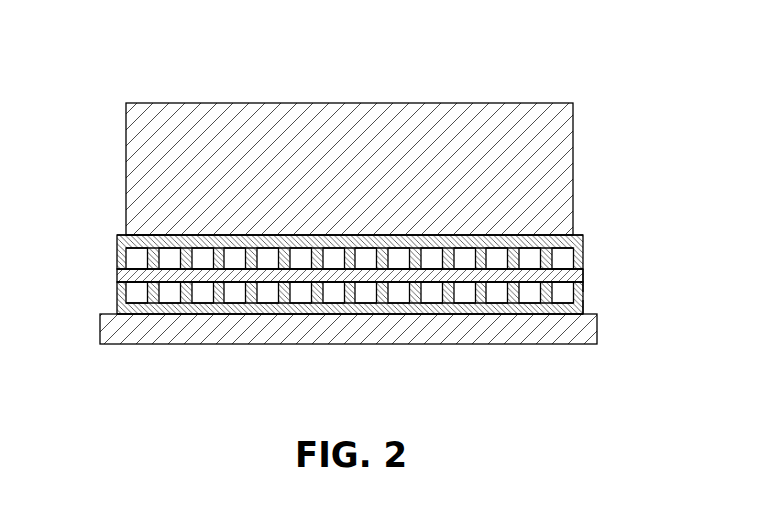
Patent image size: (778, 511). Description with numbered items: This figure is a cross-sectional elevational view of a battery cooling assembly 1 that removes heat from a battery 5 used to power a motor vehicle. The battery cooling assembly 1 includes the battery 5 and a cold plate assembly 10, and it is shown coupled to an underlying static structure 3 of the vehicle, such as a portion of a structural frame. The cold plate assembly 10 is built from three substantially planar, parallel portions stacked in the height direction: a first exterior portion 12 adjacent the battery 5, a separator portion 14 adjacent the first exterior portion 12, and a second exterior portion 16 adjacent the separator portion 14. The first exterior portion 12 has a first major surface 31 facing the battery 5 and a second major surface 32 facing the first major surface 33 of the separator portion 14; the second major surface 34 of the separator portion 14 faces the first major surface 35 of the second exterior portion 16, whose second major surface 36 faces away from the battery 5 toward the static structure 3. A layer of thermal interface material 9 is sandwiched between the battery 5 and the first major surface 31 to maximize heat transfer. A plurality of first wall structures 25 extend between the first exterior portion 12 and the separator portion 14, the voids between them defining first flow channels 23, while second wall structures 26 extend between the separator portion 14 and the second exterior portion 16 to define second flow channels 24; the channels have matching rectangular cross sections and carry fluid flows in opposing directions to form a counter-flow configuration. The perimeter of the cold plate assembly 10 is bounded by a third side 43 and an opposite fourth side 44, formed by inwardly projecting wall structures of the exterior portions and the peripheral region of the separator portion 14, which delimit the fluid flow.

The battery cooling assembly 1 is at (99, 88).
The static structure 3 is at (327, 332).
The battery 5 is at (347, 115).
The thermal interface material 9 is at (138, 235).
The cold plate assembly 10 is at (641, 258).
The first exterior portion 12 is at (371, 223).
The separator portion 14 is at (371, 225).
The second exterior portion 16 is at (578, 308).
The first flow channels 23 is at (267, 257).
The second flow channels 24 is at (235, 295).
The first wall structures 25 is at (186, 257).
The second wall structures 26 is at (152, 295).
The first major surface of the first exterior portion 31 is at (356, 238).
The second major surface of the first exterior portion 32 is at (492, 248).
The first major surface of the separator portion 33 is at (393, 273).
The second major surface of the separator portion 34 is at (530, 282).
The first major surface of the second exterior portion 35 is at (438, 303).
The second major surface of the second exterior portion 36 is at (576, 305).
The third side 43 is at (349, 223).
The fourth side 44 is at (584, 288).